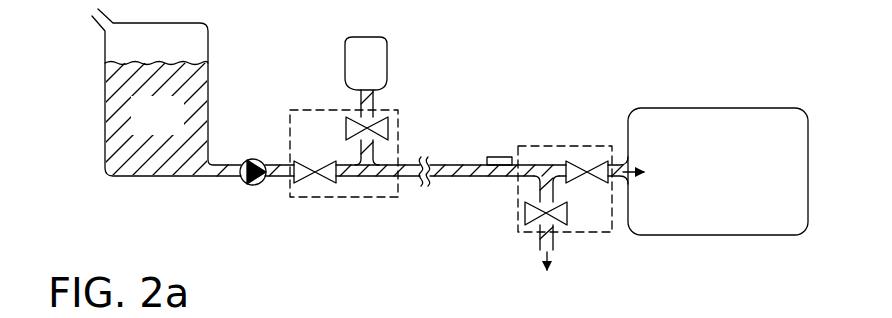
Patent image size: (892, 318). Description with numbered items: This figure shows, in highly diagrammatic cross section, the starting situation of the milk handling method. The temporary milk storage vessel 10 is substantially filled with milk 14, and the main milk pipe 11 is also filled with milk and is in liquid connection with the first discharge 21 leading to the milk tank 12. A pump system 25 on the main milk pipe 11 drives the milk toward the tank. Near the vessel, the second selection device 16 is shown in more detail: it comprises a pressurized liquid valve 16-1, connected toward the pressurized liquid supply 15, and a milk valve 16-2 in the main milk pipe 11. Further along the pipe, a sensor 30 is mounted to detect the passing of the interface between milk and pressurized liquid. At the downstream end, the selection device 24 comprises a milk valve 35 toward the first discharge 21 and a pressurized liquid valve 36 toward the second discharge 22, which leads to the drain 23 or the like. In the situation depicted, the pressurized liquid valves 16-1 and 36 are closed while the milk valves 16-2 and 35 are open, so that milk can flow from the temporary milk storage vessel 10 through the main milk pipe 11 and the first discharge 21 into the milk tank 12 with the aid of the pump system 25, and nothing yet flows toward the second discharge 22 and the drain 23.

The temporary milk storage vessel 10 is at (105, 48).
The milk 14 is at (180, 132).
The main milk pipe 11 is at (488, 176).
The pump system 25 is at (253, 160).
The second selection device 16 is at (366, 196).
The pressurized liquid valve 16-1 is at (385, 128).
The milk valve 16-2 is at (315, 172).
The pressurized liquid supply 15 is at (404, 61).
The sensor 30 is at (500, 157).
The selection device 24 is at (593, 232).
The milk valve 35 is at (577, 165).
The first discharge 21 is at (618, 167).
The milk tank 12 is at (718, 235).
The pressurized liquid valve 36 is at (527, 213).
The second discharge 22 is at (552, 243).
The drain 23 is at (549, 280).